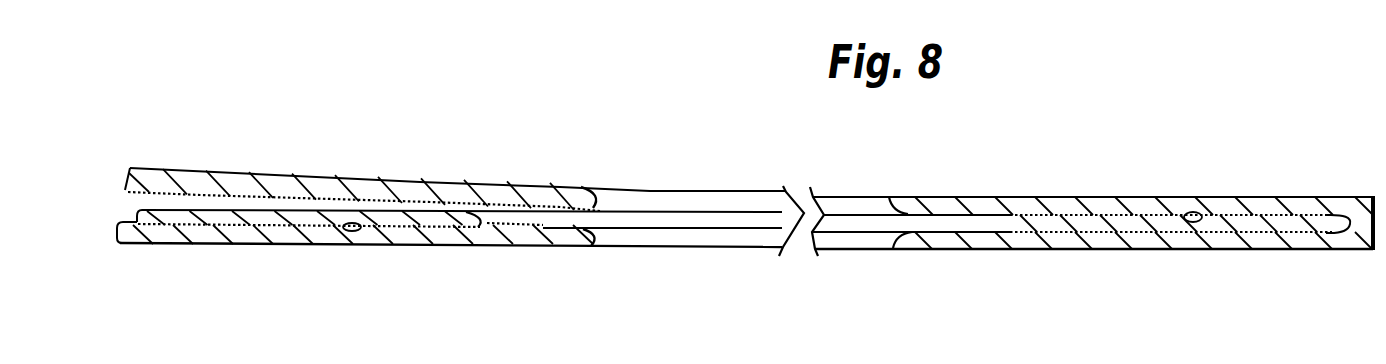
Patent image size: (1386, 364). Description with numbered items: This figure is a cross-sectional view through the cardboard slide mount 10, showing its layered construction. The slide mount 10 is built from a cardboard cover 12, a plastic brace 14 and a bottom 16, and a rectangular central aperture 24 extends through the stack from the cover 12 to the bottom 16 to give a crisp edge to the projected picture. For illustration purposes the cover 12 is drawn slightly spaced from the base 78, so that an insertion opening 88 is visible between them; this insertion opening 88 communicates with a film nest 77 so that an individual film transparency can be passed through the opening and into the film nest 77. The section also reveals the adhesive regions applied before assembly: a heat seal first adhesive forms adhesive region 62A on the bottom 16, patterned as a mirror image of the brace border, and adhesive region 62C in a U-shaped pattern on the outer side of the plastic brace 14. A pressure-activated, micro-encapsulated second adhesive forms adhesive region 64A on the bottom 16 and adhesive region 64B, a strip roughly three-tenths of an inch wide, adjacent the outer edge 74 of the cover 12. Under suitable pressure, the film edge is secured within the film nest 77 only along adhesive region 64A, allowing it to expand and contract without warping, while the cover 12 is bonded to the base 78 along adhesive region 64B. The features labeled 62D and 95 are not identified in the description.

The cardboard slide mount 10 is at (1146, 160).
The cardboard cover 12 is at (265, 178).
The plastic brace 14 is at (137, 217).
The bottom 16 is at (143, 246).
The central aperture 24 is at (622, 197).
The adhesive region 62A is at (253, 232).
The adhesive region 62C is at (357, 232).
The fourth fiber layer 62D is at (1294, 210).
The adhesive region 64A is at (515, 225).
The adhesive region 64B is at (209, 166).
The outer edge 74 is at (127, 182).
The film nest 77 is at (500, 232).
The base 78 is at (441, 257).
The insertion opening 88 is at (137, 199).
The rounded end 95 is at (123, 229).